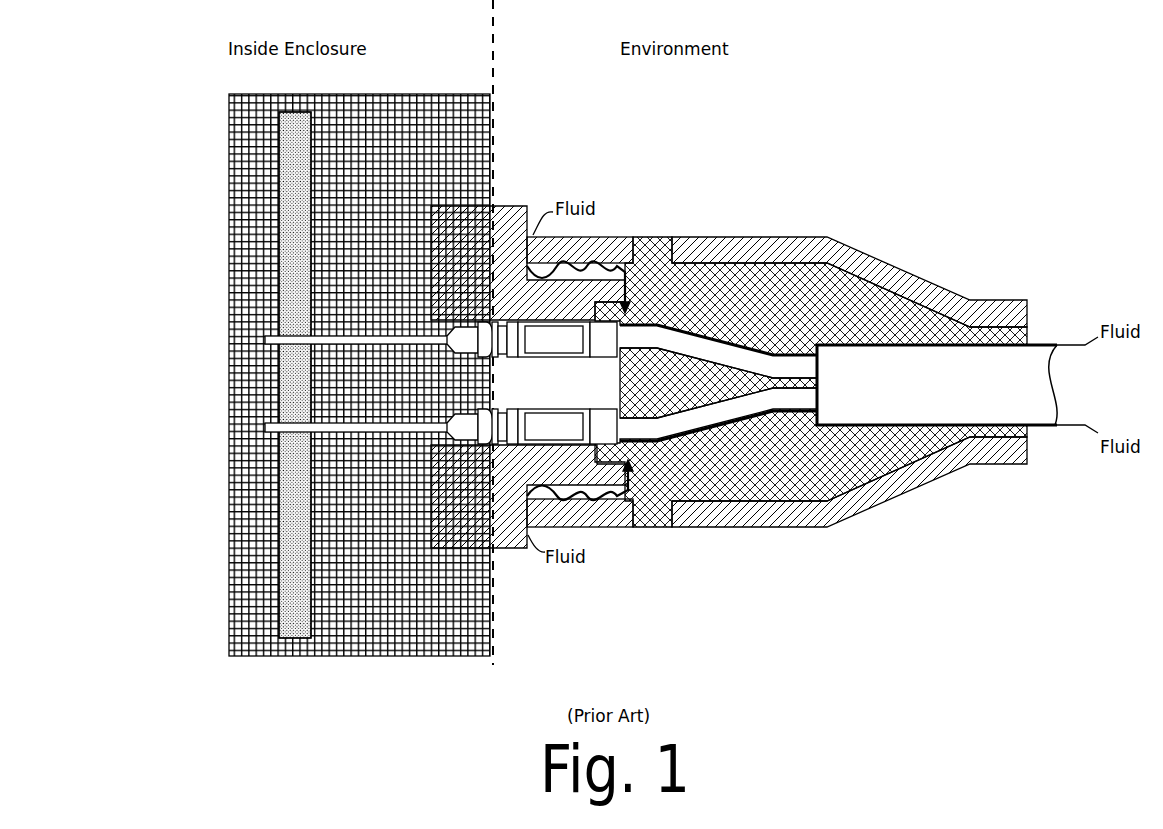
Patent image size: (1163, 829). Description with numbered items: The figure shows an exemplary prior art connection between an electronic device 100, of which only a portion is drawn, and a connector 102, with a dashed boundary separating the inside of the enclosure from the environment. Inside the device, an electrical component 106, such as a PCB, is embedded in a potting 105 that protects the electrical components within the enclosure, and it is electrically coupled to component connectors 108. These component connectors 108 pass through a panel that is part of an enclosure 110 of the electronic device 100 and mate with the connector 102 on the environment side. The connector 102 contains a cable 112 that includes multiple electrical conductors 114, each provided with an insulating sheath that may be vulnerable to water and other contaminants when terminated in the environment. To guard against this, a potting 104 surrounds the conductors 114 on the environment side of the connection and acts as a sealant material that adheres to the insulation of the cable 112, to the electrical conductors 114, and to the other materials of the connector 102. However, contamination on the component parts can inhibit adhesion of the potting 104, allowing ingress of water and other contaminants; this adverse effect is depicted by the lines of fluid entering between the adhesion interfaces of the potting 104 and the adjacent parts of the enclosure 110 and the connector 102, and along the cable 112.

The electronic device 100 is at (149, 80).
The connector 102 is at (967, 160).
The potting 104 is at (793, 315).
The potting 105 is at (386, 265).
The electrical component 106 is at (293, 203).
The component connectors 108 is at (263, 340).
The enclosure 110 is at (502, 256).
The cable 112 is at (957, 398).
The electrical conductors 114 is at (697, 340).